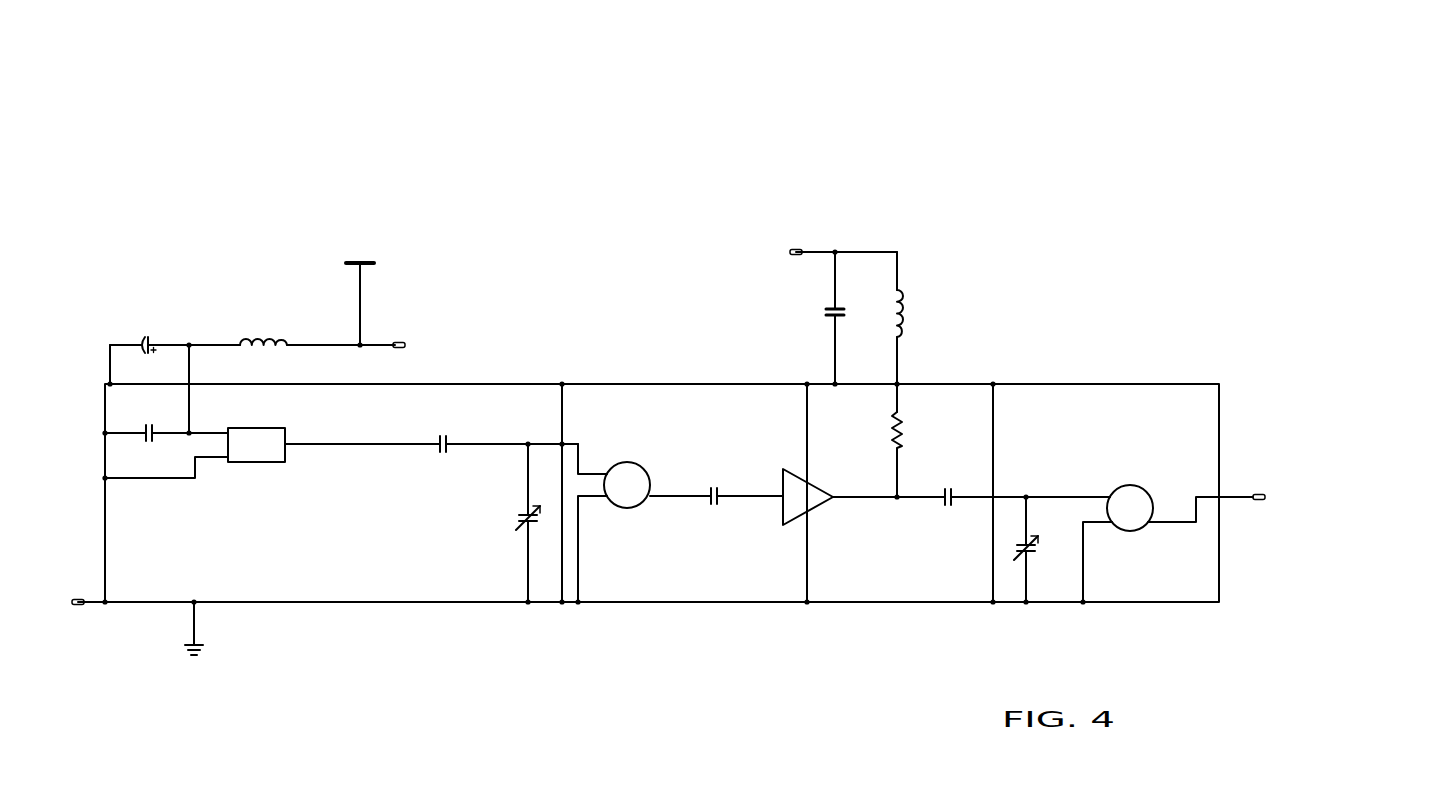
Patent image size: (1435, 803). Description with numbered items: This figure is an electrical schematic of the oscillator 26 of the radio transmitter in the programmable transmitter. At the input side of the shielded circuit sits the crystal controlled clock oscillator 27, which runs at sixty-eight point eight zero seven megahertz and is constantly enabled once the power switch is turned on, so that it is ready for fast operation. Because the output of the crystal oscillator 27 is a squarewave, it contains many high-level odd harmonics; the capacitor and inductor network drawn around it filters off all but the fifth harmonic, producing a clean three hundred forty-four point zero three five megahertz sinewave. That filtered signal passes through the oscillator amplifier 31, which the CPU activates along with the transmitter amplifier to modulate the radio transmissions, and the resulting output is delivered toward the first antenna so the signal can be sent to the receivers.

The oscillator 26 is at (86, 268).
The oscillator crystal 27 is at (273, 427).
The oscillator amplifier 31 is at (782, 474).